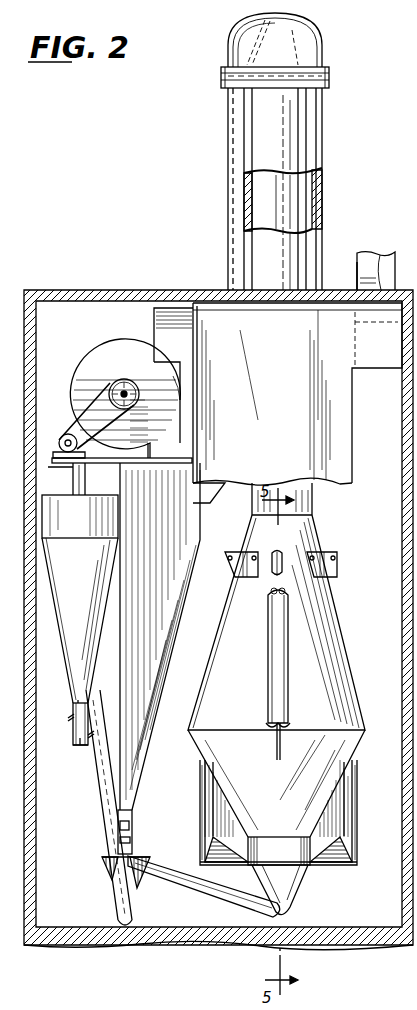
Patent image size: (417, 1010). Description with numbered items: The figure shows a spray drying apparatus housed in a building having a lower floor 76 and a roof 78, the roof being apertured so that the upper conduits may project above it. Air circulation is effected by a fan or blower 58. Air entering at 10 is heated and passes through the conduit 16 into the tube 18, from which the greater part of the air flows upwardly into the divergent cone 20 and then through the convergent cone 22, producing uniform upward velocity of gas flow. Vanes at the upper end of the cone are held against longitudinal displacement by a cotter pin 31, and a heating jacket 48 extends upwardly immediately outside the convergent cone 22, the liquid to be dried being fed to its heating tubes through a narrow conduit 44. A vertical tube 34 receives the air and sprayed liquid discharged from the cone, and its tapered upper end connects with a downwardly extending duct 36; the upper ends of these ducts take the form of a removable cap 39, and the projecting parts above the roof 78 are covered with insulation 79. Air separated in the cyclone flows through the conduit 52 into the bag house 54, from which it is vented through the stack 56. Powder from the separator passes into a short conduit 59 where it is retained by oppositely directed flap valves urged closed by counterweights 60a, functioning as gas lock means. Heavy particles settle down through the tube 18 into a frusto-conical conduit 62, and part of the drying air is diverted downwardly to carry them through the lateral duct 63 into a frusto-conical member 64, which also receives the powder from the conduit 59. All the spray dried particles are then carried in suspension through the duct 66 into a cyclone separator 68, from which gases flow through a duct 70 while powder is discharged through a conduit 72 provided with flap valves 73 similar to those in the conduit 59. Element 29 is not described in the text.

The air inlet 10 is at (357, 800).
The conduit 16 is at (337, 835).
The tube 18 is at (290, 861).
The divergent cone 20 is at (285, 809).
The convergent cone 22 is at (325, 690).
The mounting rod 29 is at (342, 556).
The cotter pin 31 is at (316, 548).
The vertical tube 34 is at (289, 208).
The downwardly extending duct 36 is at (234, 218).
The removable cap 39 is at (312, 49).
The narrow conduit 44 is at (276, 750).
The heating jacket 48 is at (267, 652).
The conduit 52 is at (180, 343).
The bag house 54 is at (252, 374).
The stack 56 is at (357, 268).
The fan or blower 58 is at (128, 371).
The short conduit 59 is at (131, 822).
The counterweights 60a is at (132, 840).
The frusto-conical conduit 62 is at (298, 898).
The lateral duct 63 is at (218, 908).
The frusto-conical member 64 is at (138, 887).
The duct 66 is at (98, 802).
The cyclone separator 68 is at (88, 583).
The duct 70 is at (90, 485).
The conduit 72 is at (74, 732).
The flap valves 73 is at (80, 746).
The lower floor 76 is at (78, 927).
The roof 78 is at (380, 290).
The insulation 79 is at (245, 188).